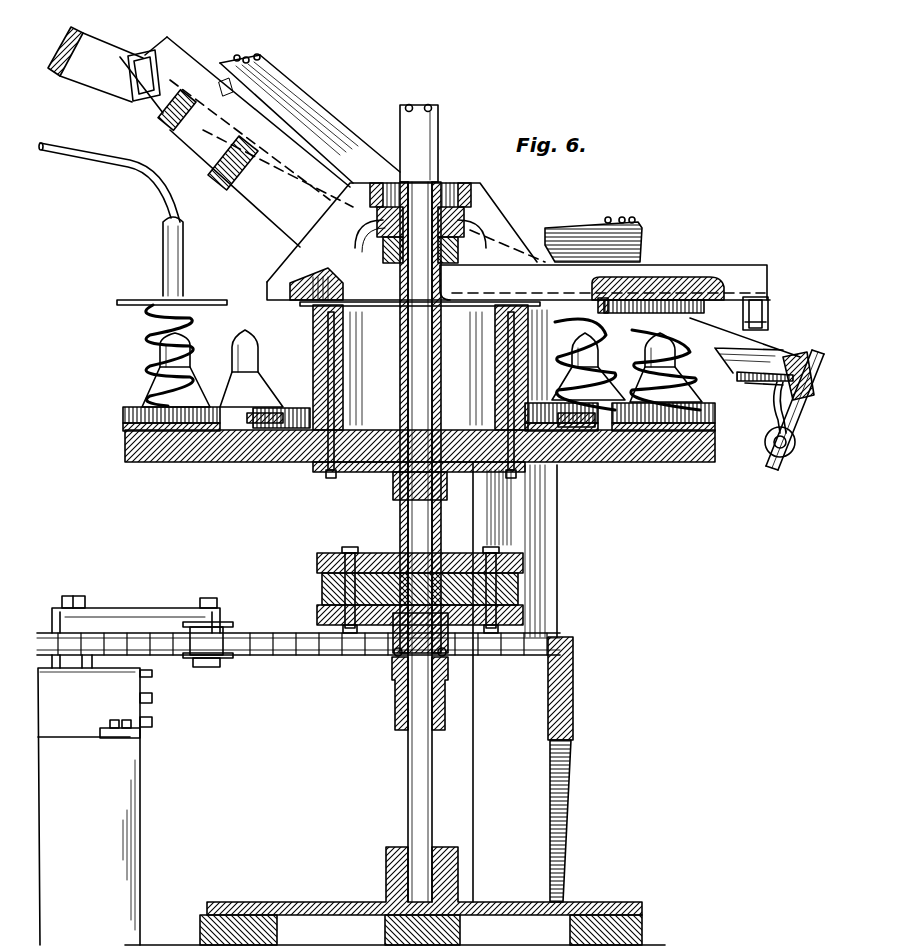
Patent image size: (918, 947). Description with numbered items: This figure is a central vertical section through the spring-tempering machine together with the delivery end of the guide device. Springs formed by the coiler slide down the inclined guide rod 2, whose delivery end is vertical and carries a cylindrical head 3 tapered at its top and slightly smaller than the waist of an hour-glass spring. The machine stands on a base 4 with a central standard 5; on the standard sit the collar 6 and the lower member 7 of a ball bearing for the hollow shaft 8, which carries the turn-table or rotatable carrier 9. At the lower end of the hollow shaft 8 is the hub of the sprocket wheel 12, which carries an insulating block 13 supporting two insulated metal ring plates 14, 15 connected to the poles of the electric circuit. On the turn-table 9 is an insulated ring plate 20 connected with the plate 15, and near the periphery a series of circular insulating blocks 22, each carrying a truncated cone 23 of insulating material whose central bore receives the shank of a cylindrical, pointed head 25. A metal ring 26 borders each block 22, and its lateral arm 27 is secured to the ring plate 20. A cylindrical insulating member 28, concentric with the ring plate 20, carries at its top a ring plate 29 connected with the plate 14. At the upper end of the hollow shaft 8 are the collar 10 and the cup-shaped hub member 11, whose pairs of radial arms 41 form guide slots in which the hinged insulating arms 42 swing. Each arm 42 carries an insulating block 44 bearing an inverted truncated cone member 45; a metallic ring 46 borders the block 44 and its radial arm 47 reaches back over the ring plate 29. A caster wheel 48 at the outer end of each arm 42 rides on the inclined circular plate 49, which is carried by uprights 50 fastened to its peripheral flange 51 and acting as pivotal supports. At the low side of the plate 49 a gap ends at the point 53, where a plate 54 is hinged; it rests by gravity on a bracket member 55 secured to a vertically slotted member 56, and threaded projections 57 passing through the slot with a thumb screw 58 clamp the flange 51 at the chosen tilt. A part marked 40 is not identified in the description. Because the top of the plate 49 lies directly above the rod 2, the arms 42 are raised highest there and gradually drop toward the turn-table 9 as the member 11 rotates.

The guide rod 2 is at (138, 163).
The cylindrical head 3 is at (163, 263).
The base 4 is at (356, 902).
The central standard 5 is at (408, 808).
The collar 6 is at (393, 686).
The lower member of a ball bearing 7 is at (446, 661).
The hollow shaft 8 is at (400, 522).
The turn-table 9 is at (172, 462).
The collar 10 is at (462, 228).
The rotatable member 11 is at (470, 196).
The sprocket wheel 12 is at (375, 654).
The insulating block 13 is at (320, 590).
The ring plate 14 is at (316, 614).
The ring plate 15 is at (316, 556).
The ring plate 20 is at (293, 407).
The circular insulating block 22 is at (123, 427).
The truncated cone 23 is at (144, 398).
The head 25 is at (162, 352).
The metal ring 26 is at (123, 412).
The arm 27 is at (240, 440).
The cylindrical member 28 is at (298, 412).
The ring plate 29 is at (312, 308).
The coil spring 40 is at (204, 319).
The arms 41 is at (284, 278).
The arms 42 is at (222, 76).
The circular blocks 44 is at (702, 278).
The inverted truncated cone-shaped member 45 is at (688, 337).
The metallic ring 46 is at (232, 178).
The radially extending arm 47 is at (278, 210).
The caster wheel 48 is at (140, 56).
The circular and inclined plate 49 is at (105, 60).
The uprights 50 is at (476, 772).
The peripheral flange 51 is at (62, 76).
The point 53 is at (760, 347).
The plate 54 is at (745, 383).
The bracket member 55 is at (777, 388).
The vertically slotted member 56 is at (776, 470).
The threaded projections 57 is at (812, 350).
The thumb screw 58 is at (790, 434).